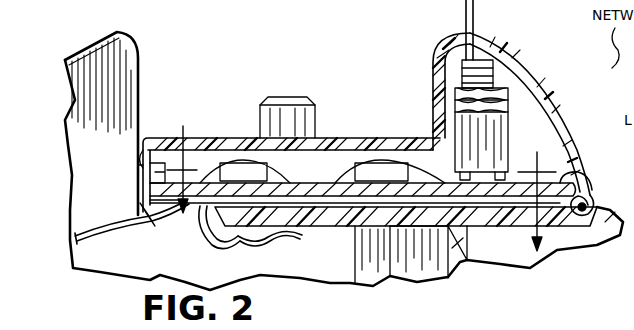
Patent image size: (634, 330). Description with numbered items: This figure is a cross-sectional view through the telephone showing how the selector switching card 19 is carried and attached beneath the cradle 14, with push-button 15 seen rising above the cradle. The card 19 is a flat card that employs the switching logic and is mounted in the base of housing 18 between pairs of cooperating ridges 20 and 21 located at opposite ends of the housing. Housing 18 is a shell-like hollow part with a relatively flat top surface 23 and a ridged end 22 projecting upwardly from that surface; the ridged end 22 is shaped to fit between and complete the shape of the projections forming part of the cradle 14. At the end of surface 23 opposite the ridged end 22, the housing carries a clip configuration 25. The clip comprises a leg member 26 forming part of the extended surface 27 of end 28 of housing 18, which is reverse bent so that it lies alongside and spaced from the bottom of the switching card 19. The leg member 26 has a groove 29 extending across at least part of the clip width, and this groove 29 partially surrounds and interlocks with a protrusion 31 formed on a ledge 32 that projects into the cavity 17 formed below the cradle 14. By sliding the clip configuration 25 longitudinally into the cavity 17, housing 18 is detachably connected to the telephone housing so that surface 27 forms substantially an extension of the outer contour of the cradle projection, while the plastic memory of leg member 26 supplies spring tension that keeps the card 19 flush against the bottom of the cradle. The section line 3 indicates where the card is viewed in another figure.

The section line 3- 3 is at (361, 177).
The cradle 14 is at (385, 137).
The push-button 15 is at (278, 96).
The cavity 17 is at (200, 243).
The housing 18 is at (536, 52).
The selector switching card 19 is at (372, 222).
The ridges 20 is at (597, 209).
The ridges 21 is at (143, 186).
The ridged end 22 is at (495, 40).
The top surface 23 is at (330, 137).
The clip configuration 25 is at (160, 238).
The leg member 26 is at (305, 238).
The extended surface 27 is at (138, 158).
The end 28 is at (139, 136).
The groove 29 is at (270, 242).
The protrusion 31 is at (232, 252).
The ledge 32 is at (428, 227).